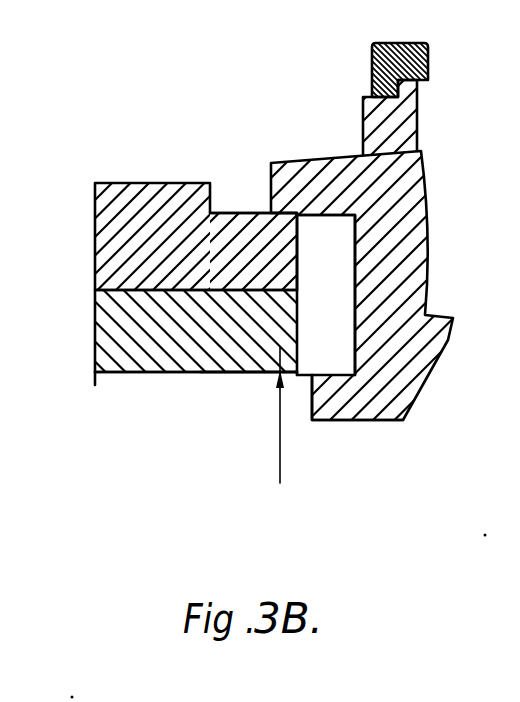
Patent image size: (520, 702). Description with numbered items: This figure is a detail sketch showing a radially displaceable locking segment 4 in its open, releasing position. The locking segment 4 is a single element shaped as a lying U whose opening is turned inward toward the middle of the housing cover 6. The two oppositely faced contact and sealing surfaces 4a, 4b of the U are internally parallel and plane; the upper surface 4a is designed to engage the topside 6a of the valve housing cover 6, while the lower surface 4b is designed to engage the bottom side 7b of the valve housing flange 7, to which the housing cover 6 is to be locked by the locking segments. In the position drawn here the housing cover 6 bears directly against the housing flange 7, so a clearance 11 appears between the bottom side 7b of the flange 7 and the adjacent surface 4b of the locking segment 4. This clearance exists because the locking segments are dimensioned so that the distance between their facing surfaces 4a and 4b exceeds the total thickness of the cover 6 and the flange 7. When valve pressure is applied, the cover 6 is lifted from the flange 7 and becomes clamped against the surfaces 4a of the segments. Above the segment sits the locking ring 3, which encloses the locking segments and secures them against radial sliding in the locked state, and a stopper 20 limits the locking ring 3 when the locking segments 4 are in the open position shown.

The locking ring 3 is at (372, 80).
The locking segment 4 is at (417, 260).
The contact and sealing surface 4a is at (323, 222).
The contact and sealing surface 4b is at (331, 372).
The housing cover 6 is at (133, 192).
The topside of the valve housing cover 6a is at (232, 213).
The housing flange 7 is at (155, 348).
The bottom side of the valve housing flange 7b is at (244, 370).
The clearance 11 is at (278, 372).
The stopper 20 is at (407, 126).